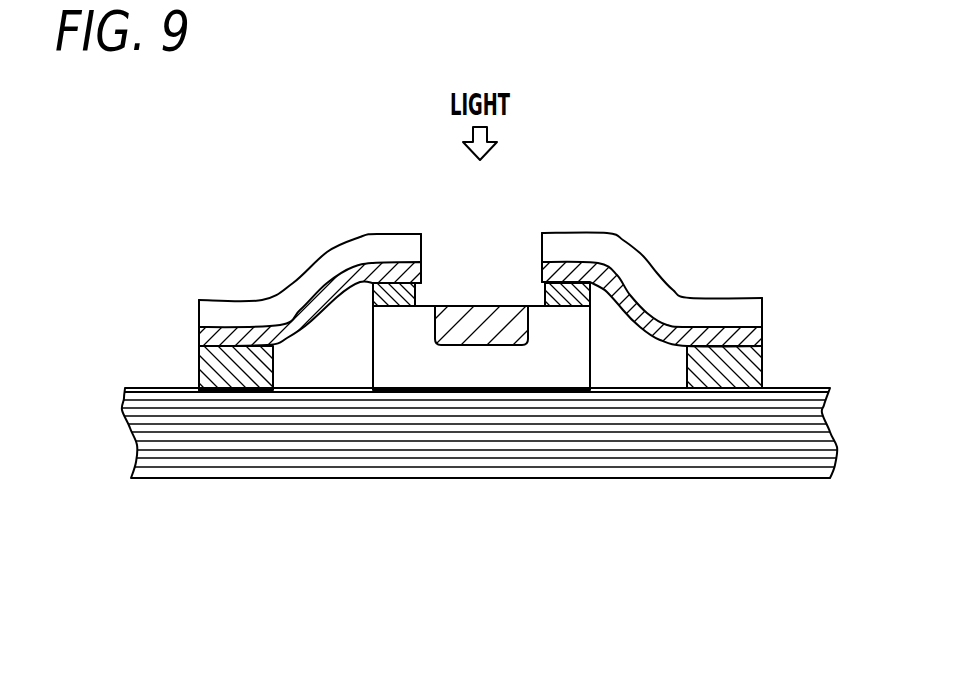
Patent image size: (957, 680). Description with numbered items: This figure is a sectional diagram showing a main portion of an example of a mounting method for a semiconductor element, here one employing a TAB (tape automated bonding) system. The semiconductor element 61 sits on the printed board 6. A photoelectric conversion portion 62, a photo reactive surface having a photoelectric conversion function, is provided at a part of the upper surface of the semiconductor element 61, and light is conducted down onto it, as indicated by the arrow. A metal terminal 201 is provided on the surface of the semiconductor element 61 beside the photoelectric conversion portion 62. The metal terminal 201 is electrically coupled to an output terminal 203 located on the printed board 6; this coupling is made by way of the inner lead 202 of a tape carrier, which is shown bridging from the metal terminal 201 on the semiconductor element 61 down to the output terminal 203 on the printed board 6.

The printed board 6 is at (250, 455).
The semiconductor element 61 is at (475, 368).
The photoelectric conversion portion 62 is at (478, 323).
The metal terminal 201 is at (410, 298).
The inner lead 202 is at (337, 295).
The output terminal 203 is at (212, 372).